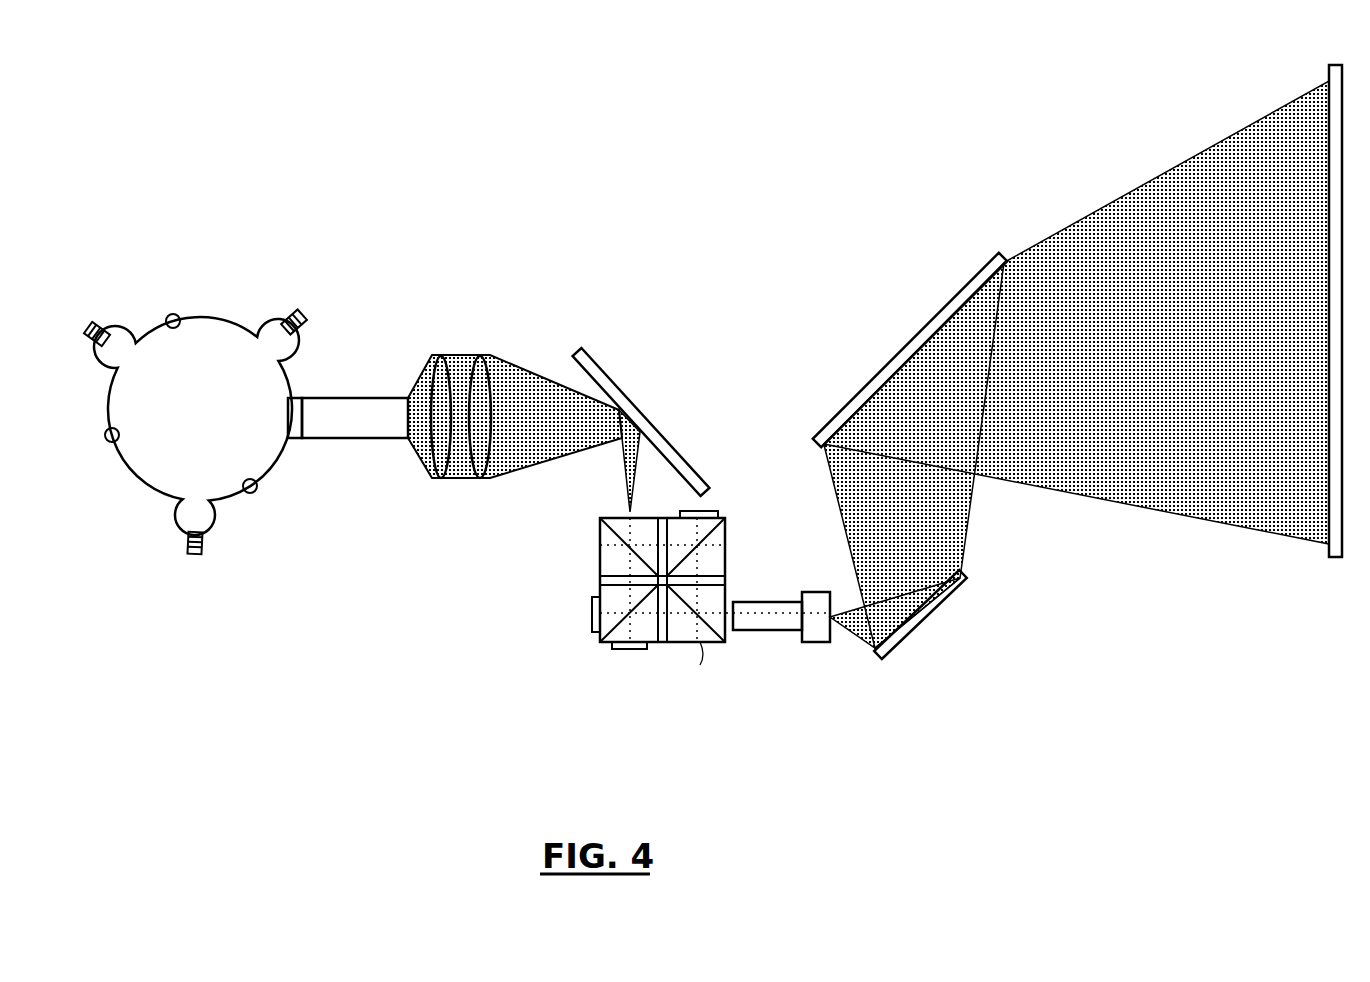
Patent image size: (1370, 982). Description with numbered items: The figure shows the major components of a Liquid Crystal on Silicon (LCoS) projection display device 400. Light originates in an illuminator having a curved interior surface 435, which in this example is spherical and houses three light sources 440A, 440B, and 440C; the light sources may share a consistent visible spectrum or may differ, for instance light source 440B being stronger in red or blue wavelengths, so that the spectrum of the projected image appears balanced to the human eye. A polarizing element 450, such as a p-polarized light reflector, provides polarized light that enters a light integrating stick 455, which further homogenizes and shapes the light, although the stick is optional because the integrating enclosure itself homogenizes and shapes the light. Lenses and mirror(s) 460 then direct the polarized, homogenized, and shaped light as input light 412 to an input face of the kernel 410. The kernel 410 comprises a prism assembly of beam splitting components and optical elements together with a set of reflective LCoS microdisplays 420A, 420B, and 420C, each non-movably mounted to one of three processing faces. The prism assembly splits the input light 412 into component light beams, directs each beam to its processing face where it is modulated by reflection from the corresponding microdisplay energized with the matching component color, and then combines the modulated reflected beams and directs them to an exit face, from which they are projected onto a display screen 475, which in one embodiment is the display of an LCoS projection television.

The Liquid Crystal on Silicon (LCoS) projection display device 400 is at (975, 777).
The kernel 410 is at (572, 552).
The input light 412 is at (620, 464).
The reflective LCoS microdisplay 420A is at (592, 607).
The reflective LCoS microdisplay 420B is at (618, 650).
The reflective LCoS microdisplay 420C is at (700, 511).
The curved interior surface 435 is at (176, 314).
The light source 440A is at (273, 303).
The light source 440B is at (105, 307).
The light source 440C is at (190, 567).
The polarizing element 450 is at (293, 398).
The light integrating stick 455 is at (343, 398).
The lenses and mirror(s) 460 is at (728, 410).
The display screen 475 is at (1333, 560).